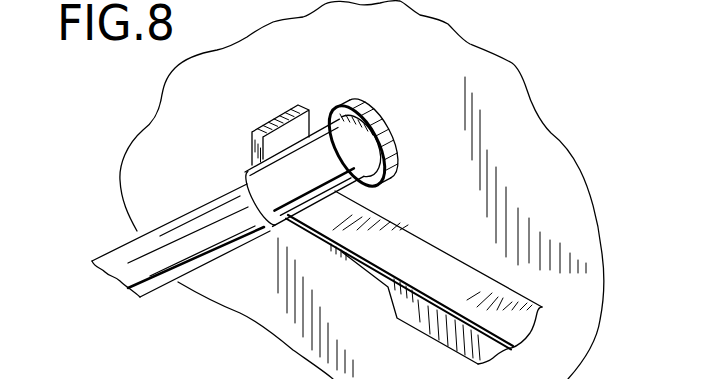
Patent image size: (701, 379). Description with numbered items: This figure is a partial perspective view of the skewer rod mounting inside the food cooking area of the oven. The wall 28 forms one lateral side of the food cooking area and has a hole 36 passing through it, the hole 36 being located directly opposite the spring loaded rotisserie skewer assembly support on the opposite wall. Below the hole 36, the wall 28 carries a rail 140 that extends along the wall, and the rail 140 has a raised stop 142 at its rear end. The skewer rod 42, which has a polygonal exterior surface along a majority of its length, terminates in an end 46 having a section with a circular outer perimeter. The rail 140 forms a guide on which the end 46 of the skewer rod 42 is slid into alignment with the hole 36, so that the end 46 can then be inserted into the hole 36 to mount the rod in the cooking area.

The wall 28 is at (546, 138).
The hole 36 is at (368, 100).
The skewer rod 42 is at (126, 277).
The end of the skewer rod 46 is at (320, 184).
The rail 140 is at (374, 268).
The raised stop 142 is at (273, 117).